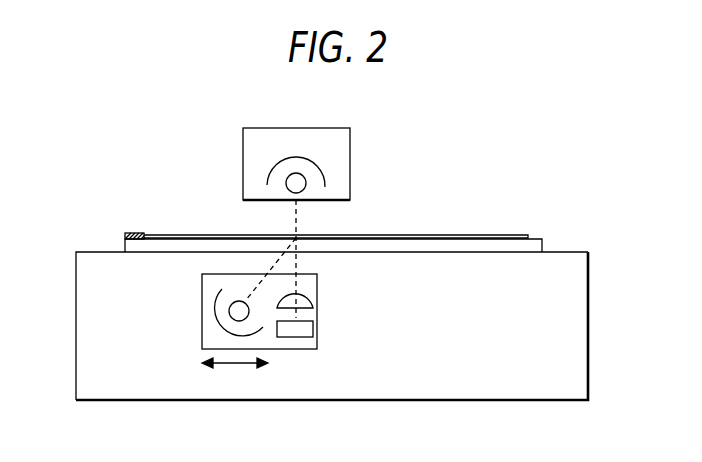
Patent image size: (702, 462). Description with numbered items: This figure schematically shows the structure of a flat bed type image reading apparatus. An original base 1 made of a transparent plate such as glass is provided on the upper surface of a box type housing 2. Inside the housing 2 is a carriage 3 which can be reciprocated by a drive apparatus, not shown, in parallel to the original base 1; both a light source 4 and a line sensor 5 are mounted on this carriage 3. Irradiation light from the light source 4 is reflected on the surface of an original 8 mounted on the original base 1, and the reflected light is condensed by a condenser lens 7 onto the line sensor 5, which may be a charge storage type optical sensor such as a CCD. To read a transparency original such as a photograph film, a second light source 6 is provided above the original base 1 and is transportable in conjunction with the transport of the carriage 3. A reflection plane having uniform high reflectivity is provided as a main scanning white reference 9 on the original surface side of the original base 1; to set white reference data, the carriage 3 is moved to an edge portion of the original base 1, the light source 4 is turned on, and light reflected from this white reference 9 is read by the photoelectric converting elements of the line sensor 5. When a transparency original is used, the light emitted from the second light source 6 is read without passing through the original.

The original base 1 is at (541, 239).
The housing 2 is at (519, 401).
The carriage 3 is at (202, 341).
The light source 4 is at (218, 304).
The line sensor 5 is at (313, 330).
The second light source 6 is at (287, 191).
The condenser lens 7 is at (313, 303).
The original 8 is at (453, 235).
The main scanning white reference 9 is at (130, 233).